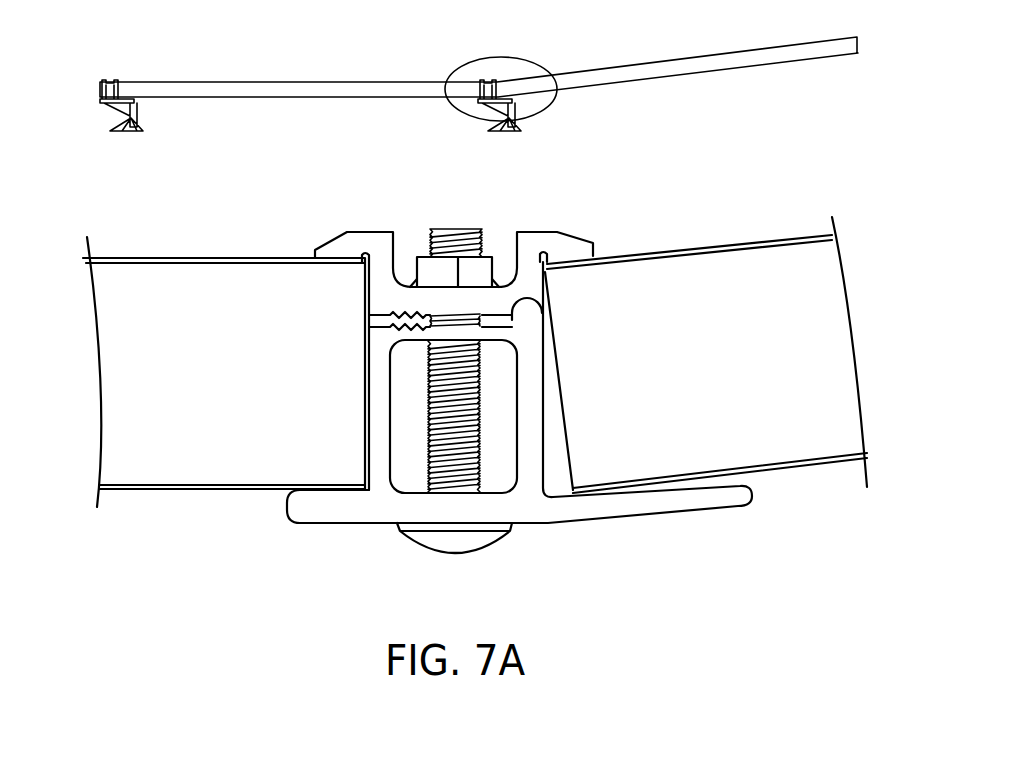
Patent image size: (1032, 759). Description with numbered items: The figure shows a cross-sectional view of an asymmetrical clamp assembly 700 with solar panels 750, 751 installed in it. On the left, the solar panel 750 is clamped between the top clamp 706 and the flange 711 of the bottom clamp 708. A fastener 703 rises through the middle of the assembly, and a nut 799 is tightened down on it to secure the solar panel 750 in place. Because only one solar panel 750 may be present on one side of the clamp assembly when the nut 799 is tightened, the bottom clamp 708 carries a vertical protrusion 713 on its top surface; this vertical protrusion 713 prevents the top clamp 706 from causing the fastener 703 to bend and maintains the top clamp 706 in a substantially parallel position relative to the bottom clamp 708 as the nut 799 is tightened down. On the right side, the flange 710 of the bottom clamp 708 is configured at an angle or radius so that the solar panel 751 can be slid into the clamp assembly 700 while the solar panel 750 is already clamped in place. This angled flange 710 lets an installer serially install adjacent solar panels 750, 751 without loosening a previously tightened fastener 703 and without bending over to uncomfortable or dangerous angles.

The clamp assembly 700 is at (192, 215).
The fastener 703 is at (455, 228).
The top clamp 706 is at (380, 230).
The bottom clamp 708 is at (525, 450).
The flange 710 is at (617, 503).
The flange 711 is at (323, 505).
The vertical protrusion 713 is at (528, 320).
The solar panel 750 is at (192, 412).
The solar panel 751 is at (787, 388).
The nut 799 is at (482, 252).